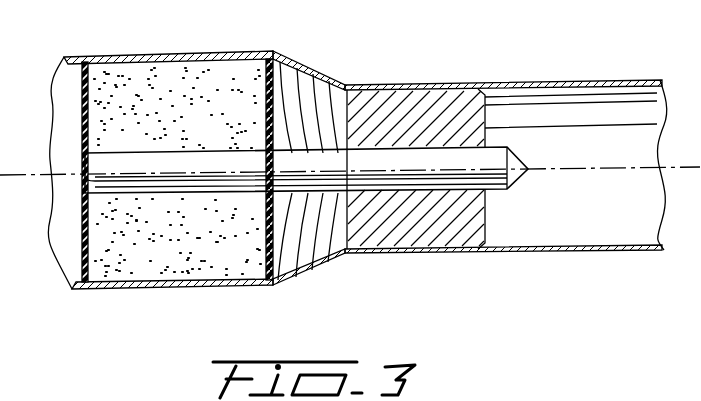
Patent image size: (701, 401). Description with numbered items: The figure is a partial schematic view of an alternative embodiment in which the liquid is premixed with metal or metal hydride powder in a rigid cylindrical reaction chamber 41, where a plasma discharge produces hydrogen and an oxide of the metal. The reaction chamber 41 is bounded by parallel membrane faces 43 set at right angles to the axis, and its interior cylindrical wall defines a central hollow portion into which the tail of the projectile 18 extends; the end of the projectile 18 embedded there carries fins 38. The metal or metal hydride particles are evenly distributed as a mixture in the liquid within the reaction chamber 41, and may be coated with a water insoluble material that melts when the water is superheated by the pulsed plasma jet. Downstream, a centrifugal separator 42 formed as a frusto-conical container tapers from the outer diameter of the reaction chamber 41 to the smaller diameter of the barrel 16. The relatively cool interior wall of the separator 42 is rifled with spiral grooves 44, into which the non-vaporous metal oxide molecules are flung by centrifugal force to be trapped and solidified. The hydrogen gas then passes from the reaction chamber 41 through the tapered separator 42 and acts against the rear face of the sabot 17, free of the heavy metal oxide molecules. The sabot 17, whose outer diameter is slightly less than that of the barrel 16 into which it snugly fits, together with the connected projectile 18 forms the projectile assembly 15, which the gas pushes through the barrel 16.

The projectile assembly 15 is at (430, 91).
The barrel 16 is at (616, 230).
The sabot 17 is at (447, 232).
The projectile 18 is at (493, 157).
The fins 38 is at (83, 186).
The reaction chamber 41 is at (185, 81).
The centrifugal separator 42 is at (326, 79).
The membrane faces 43 is at (82, 96).
The spiral grooves 44 is at (312, 249).